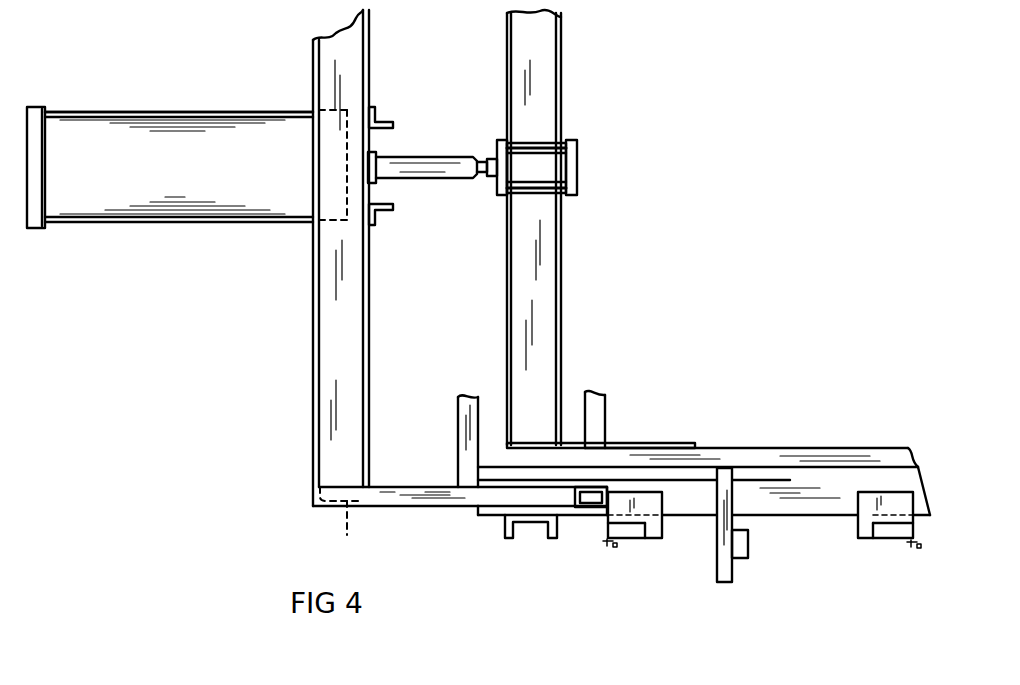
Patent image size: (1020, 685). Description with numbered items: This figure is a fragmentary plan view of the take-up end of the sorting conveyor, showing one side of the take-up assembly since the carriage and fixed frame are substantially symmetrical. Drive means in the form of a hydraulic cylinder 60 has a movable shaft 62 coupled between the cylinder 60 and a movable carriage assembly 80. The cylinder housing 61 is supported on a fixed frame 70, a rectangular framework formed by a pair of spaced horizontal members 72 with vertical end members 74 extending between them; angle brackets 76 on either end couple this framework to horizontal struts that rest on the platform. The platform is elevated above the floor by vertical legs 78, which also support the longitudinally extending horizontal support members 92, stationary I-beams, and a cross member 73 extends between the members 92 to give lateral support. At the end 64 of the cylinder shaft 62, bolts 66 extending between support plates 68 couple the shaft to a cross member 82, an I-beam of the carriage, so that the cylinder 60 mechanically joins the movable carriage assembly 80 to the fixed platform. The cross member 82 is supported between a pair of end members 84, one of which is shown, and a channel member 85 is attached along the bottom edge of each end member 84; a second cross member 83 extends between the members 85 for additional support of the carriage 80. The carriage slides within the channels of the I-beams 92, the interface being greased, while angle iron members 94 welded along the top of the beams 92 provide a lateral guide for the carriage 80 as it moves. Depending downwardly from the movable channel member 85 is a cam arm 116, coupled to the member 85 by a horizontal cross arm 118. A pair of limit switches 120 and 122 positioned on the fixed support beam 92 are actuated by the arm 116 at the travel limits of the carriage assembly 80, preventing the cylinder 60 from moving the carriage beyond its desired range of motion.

The hydraulic cylinder 60 is at (145, 110).
The cylinder housing 61 is at (225, 112).
The movable shaft 62 is at (410, 158).
The end of cylinder shaft 64 is at (482, 158).
The bolts 66 is at (545, 192).
The support plates 68 is at (578, 159).
The fixed frame 70 is at (319, 258).
The horizontal members 72 is at (313, 327).
The cross member 73 is at (458, 412).
The vertical end members 74 is at (337, 523).
The angle brackets 76 is at (385, 508).
The vertical legs 78 is at (508, 536).
The movable carriage assembly 80 is at (573, 227).
The cross member 82 is at (562, 96).
The second cross member 83 is at (605, 408).
The end members 84 is at (571, 443).
The channel member 85 is at (784, 458).
The horizontal support members 92 is at (790, 518).
The angle iron members 94 is at (500, 466).
The cam arm 116 is at (748, 558).
The horizontal cross arm 118 is at (717, 570).
The limit switch 120 is at (628, 540).
The limit switch 122 is at (877, 540).